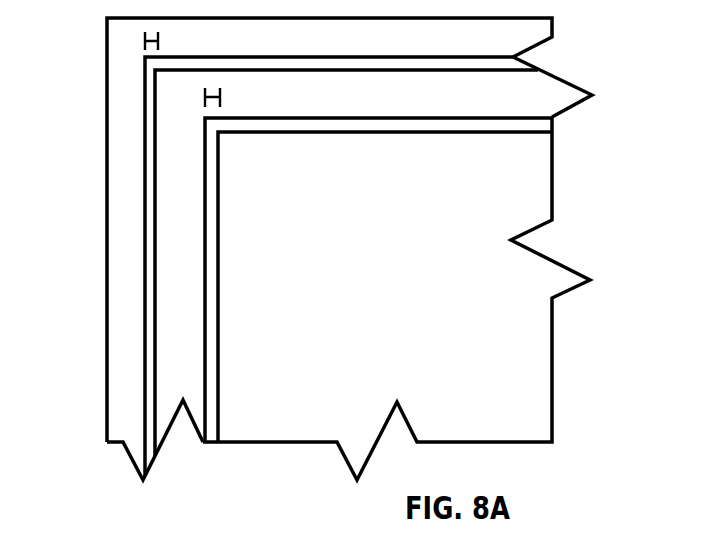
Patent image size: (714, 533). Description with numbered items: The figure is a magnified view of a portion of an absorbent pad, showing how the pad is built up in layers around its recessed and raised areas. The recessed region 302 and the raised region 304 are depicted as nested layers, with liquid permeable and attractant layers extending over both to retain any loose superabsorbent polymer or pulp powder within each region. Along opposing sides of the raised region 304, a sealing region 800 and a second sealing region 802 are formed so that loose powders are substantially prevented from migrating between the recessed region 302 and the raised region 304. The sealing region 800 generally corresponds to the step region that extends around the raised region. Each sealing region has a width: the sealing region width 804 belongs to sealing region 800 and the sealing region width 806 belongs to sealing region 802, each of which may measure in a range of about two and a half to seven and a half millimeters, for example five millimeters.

The sealing region 800 is at (310, 249).
The recessed region 302 is at (396, 281).
The raised region 304 is at (341, 251).
The sealing region 802 is at (243, 180).
The sealing region width 804 is at (158, 41).
The sealing region width 806 is at (220, 97).